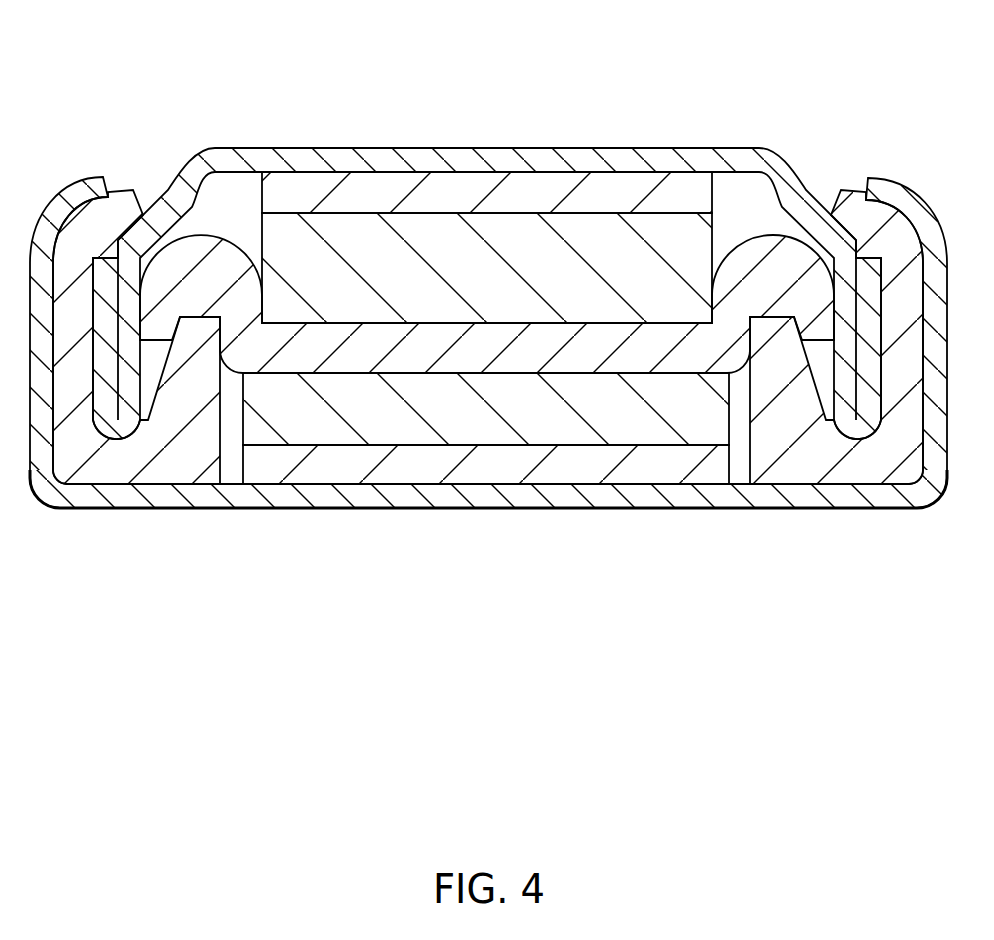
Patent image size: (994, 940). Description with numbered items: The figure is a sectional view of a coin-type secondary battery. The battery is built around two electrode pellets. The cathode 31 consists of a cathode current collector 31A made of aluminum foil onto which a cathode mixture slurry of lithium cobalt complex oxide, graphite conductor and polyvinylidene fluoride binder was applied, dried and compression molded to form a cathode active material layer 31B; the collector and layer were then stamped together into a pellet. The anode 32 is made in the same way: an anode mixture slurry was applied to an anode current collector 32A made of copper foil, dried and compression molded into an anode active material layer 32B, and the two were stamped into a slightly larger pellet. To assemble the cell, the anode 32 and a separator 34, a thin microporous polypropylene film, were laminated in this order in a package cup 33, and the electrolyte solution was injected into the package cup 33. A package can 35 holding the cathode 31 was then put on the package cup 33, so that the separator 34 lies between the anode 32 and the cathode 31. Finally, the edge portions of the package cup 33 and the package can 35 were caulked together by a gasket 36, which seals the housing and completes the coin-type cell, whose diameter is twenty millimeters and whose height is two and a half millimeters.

The cathode 31 is at (486, 524).
The cathode current collector 31A is at (667, 603).
The cathode active material layer 31B is at (633, 430).
The anode 32 is at (487, 169).
The anode current collector 32A is at (482, 195).
The anode active material layer 32B is at (455, 82).
The package cup 33 is at (255, 160).
The separator 34 is at (783, 257).
The package can 35 is at (331, 493).
The gasket 36 is at (172, 470).